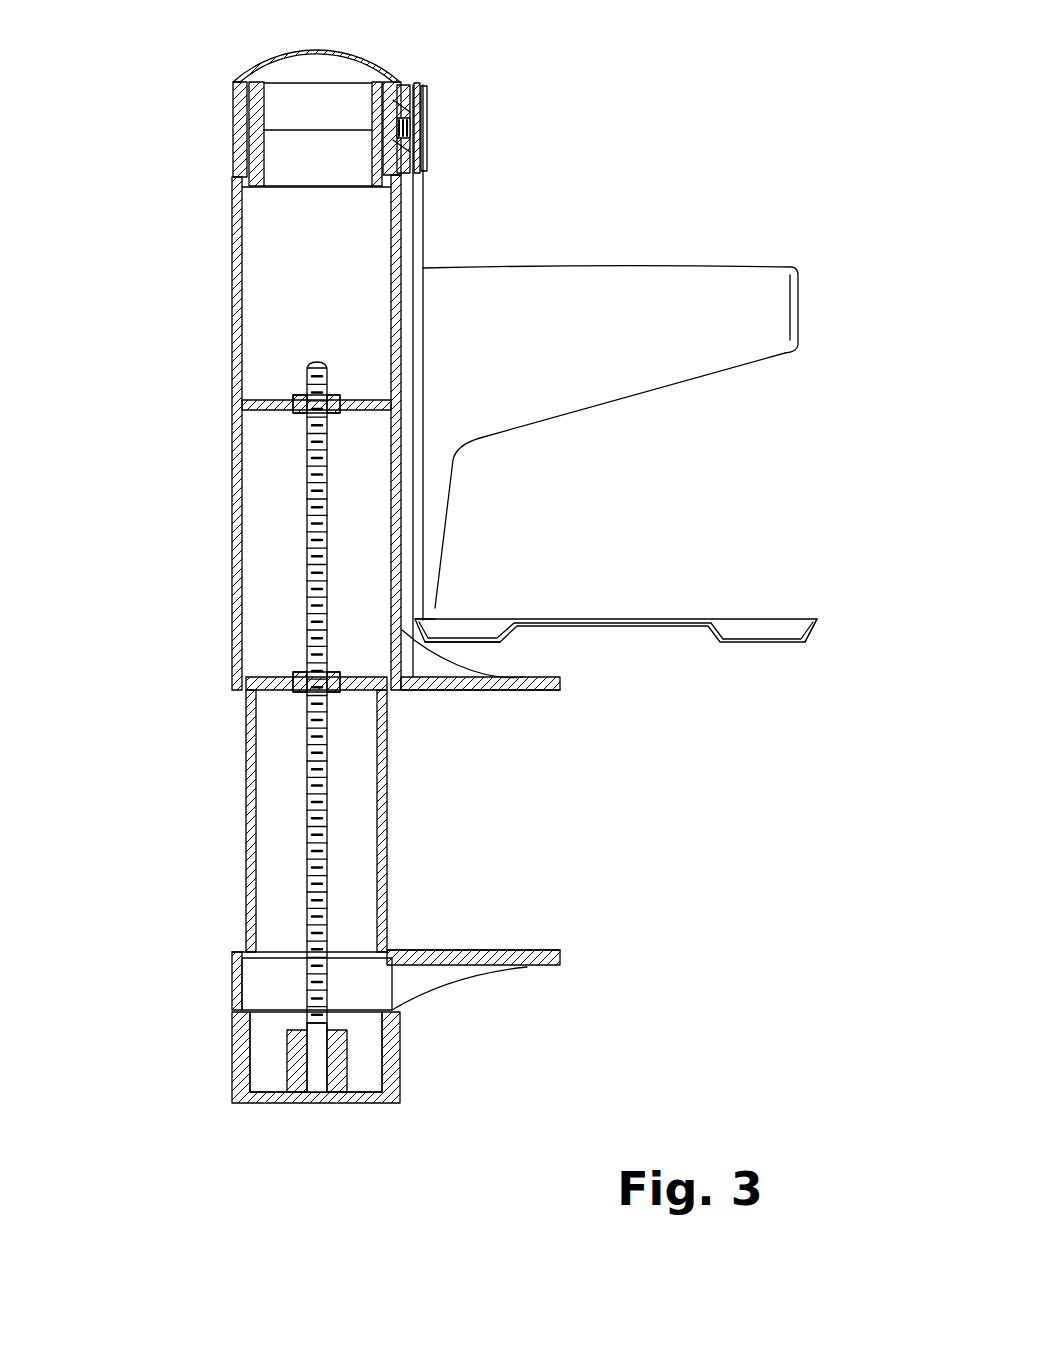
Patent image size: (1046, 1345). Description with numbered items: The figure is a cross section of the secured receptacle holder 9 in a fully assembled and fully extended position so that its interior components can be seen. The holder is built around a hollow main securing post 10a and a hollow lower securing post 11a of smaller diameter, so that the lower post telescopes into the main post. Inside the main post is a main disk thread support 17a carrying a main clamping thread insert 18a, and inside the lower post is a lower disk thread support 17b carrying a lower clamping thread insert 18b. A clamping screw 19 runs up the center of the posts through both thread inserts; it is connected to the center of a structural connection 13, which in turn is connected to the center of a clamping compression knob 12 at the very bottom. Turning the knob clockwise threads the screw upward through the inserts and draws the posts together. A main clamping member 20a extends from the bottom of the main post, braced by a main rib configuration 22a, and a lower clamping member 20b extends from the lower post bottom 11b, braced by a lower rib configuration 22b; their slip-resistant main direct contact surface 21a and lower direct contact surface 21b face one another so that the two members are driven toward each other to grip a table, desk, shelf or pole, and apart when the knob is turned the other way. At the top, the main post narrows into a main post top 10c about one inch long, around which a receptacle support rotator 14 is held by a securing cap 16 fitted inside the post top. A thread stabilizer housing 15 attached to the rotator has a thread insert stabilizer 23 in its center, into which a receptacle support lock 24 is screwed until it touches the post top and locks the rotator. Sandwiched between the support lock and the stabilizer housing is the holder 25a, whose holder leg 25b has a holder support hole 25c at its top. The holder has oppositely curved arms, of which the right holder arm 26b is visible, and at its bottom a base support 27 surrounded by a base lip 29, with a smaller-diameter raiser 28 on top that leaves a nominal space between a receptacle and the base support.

The secured receptacle holder 9 is at (147, 247).
The main securing post 10a is at (240, 508).
The main post top 10c is at (283, 160).
The lower securing post 11a is at (246, 858).
The lower post bottom 11b is at (233, 970).
The clamping compression knob 12 is at (293, 1105).
The structural connection 13 is at (345, 1065).
The receptacle support rotator 14 is at (233, 130).
The thread stabilizer housing 15 is at (408, 84).
The securing cap 16 is at (293, 55).
The main disk thread support 17a is at (267, 397).
The lower disk thread support 17b is at (265, 677).
The main clamping thread insert 18a is at (302, 412).
The lower clamping thread insert 18b is at (300, 693).
The clamping screw 19 is at (328, 849).
The main clamping member 20a is at (560, 688).
The lower clamping member 20b is at (562, 957).
The main direct contact surface 21a is at (495, 692).
The lower direct contact surface 21b is at (473, 950).
The main rib configuration 22a is at (460, 670).
The lower rib configuration 22b is at (470, 976).
The thread insert stabilizer 23 is at (427, 167).
The receptacle support lock 24 is at (427, 117).
The holder 25a is at (747, 240).
The holder leg 25b is at (428, 243).
The holder support hole 25c is at (427, 147).
The right holder arm 26b is at (700, 382).
The base support 27 is at (743, 641).
The raiser 28 is at (693, 617).
The base lip 29 is at (817, 627).